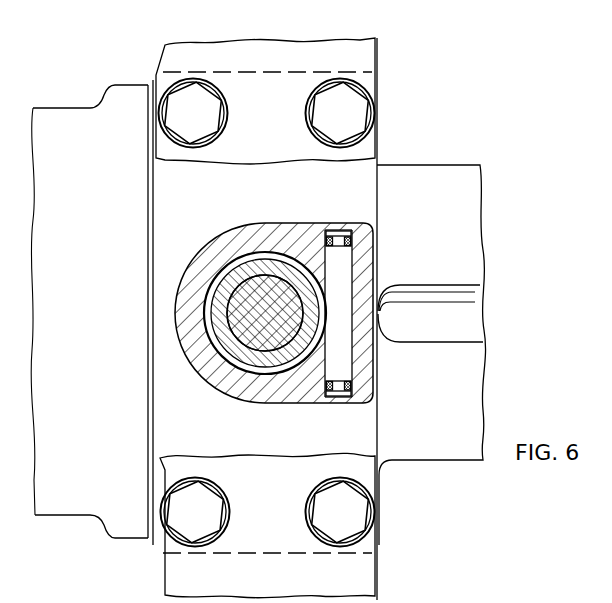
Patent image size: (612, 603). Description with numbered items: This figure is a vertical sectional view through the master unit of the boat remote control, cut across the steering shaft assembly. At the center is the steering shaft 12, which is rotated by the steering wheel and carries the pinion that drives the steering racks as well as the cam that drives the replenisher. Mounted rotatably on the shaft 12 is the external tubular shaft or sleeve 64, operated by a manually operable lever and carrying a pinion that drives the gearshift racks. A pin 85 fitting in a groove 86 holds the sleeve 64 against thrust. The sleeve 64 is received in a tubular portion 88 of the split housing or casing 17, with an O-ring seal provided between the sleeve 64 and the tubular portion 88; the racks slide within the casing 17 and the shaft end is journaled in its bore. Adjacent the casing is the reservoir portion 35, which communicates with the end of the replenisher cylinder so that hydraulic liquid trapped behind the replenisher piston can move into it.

The reservoir portion 35 is at (69, 113).
The split housing or casing 17 is at (379, 184).
The groove 86 is at (260, 250).
The external tubular shaft or sleeve 64 is at (236, 258).
The pin 85 is at (339, 233).
The shaft 12 is at (262, 340).
The tubular portion 88 is at (283, 399).